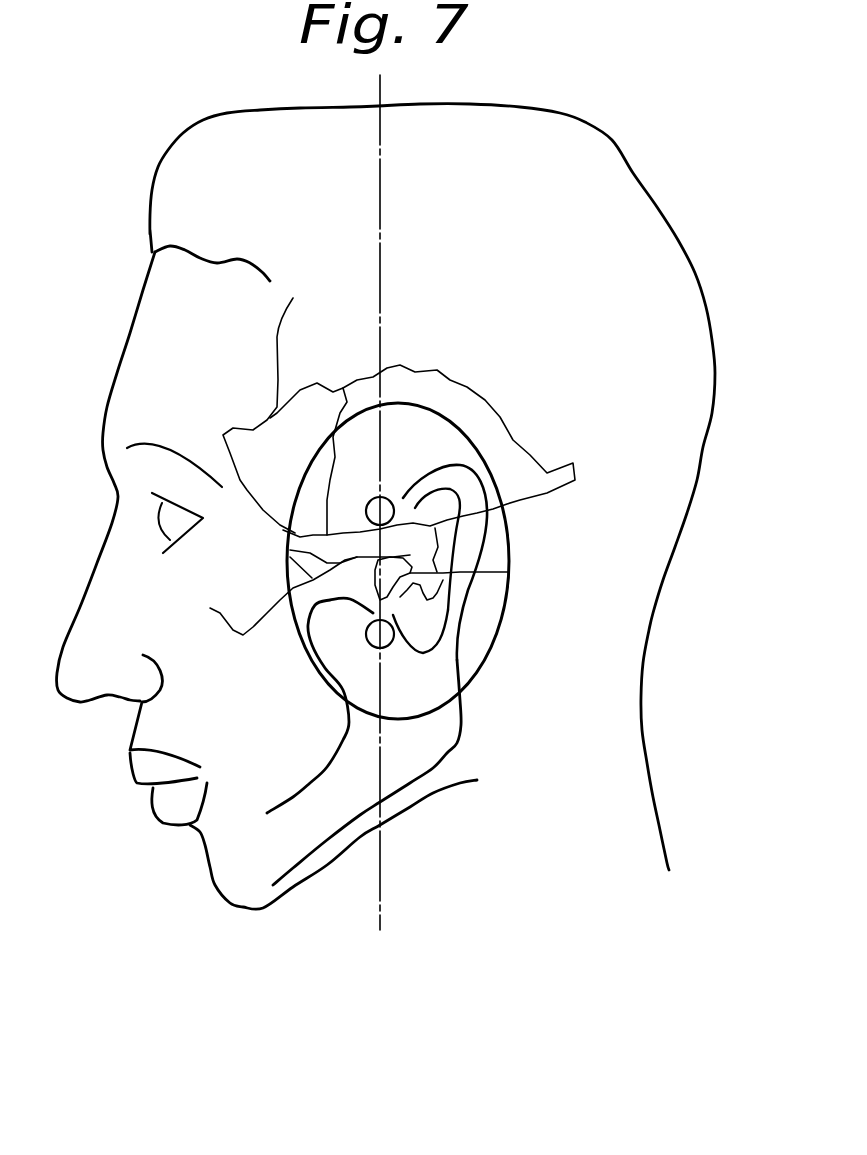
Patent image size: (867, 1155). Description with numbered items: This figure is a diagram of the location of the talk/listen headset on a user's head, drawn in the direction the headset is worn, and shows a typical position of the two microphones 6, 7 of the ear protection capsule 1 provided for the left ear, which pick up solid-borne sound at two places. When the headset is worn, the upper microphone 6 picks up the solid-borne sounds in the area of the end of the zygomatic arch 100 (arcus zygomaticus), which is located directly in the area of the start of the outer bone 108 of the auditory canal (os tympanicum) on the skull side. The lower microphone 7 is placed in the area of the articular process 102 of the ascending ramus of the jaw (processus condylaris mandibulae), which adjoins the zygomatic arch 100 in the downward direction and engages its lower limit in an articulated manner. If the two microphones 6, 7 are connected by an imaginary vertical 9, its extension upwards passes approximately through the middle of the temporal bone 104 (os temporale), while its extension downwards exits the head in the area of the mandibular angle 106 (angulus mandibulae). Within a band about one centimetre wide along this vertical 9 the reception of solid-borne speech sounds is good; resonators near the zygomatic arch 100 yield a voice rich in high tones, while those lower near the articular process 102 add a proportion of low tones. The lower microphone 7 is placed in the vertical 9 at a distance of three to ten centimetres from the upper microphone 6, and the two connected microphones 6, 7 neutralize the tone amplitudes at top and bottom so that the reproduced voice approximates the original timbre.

The ear protection capsule 1 is at (497, 645).
The upper microphone 6 is at (378, 497).
The lower microphone 7 is at (390, 642).
The imaginary vertical 9 is at (380, 902).
The zygomatic arch 100 is at (323, 547).
The articular process of the ascending ramus of the jaw 102 is at (333, 630).
The temporal bone 104 is at (485, 415).
The mandibular angle 106 is at (430, 747).
The outer bone of the auditory canal 108 is at (508, 572).